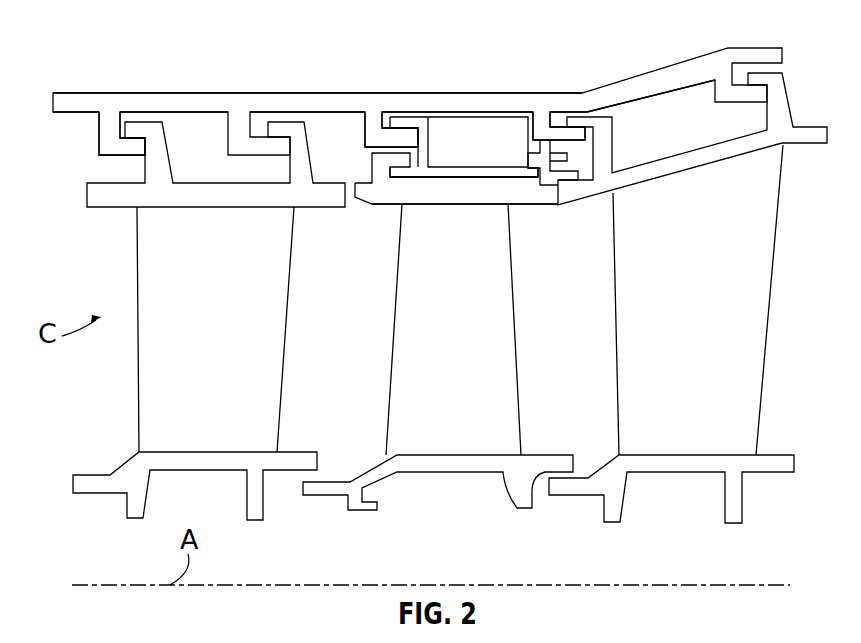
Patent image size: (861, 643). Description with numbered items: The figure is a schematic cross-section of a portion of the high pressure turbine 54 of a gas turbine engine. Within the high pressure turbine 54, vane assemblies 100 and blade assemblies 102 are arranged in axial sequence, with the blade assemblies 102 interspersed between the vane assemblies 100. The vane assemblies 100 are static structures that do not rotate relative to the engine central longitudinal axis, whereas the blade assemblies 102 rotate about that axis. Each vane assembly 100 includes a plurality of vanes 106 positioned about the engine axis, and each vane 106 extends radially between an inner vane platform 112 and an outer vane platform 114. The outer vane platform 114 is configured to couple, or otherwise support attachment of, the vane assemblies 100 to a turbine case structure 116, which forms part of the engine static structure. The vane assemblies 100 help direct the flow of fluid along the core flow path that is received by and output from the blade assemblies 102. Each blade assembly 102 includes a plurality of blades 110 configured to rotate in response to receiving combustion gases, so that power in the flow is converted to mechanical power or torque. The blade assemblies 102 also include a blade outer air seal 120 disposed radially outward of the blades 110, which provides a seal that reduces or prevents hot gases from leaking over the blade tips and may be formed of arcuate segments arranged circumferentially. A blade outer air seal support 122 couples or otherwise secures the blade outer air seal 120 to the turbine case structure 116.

The high pressure turbine 54 is at (108, 40).
The vane assemblies 100 is at (91, 150).
The blade assemblies 102 is at (348, 144).
The vanes 106 is at (240, 339).
The blades 110 is at (467, 339).
The inner vane platform 112 is at (297, 462).
The outer vane platform 114 is at (175, 202).
The turbine case structure 116 is at (476, 101).
The blade outer air seal 120 is at (532, 190).
The blade outer air seal support 122 is at (450, 173).